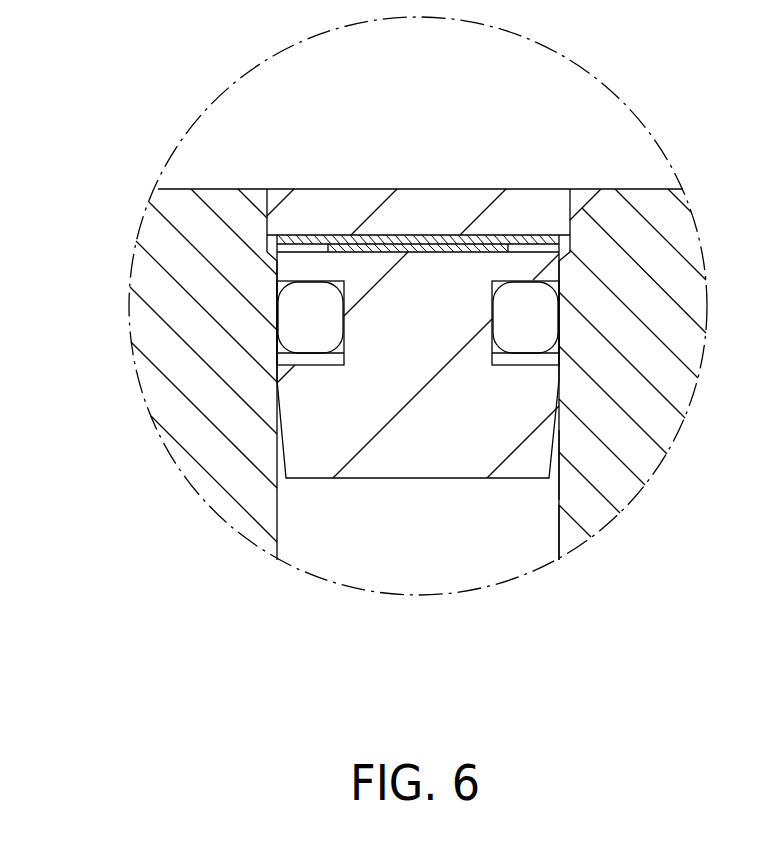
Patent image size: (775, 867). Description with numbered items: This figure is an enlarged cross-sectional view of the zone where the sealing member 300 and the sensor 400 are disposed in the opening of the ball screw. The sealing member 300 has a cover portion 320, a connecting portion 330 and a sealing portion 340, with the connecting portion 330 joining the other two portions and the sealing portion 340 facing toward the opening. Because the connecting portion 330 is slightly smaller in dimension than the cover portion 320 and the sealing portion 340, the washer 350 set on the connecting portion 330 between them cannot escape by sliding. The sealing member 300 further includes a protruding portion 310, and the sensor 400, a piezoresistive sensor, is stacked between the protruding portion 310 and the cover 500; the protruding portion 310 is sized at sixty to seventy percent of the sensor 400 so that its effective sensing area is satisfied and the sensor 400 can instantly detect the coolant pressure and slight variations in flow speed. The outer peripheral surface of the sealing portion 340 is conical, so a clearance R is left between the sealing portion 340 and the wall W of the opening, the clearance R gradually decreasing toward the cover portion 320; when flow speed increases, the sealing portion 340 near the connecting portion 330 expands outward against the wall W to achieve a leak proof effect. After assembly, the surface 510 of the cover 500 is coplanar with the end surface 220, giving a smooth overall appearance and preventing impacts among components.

The end surface 220 is at (623, 187).
The cover 500 is at (318, 213).
The surface of the cover 510 is at (512, 188).
The protruding portion 310 is at (435, 236).
The sensor 400 is at (395, 238).
The cover portion 320 is at (537, 262).
The connecting portion 330 is at (460, 309).
The sealing portion 340 is at (528, 388).
The washer 350 is at (303, 315).
The sealing member 300 is at (413, 507).
The clearance R is at (565, 468).
The wall W is at (555, 527).